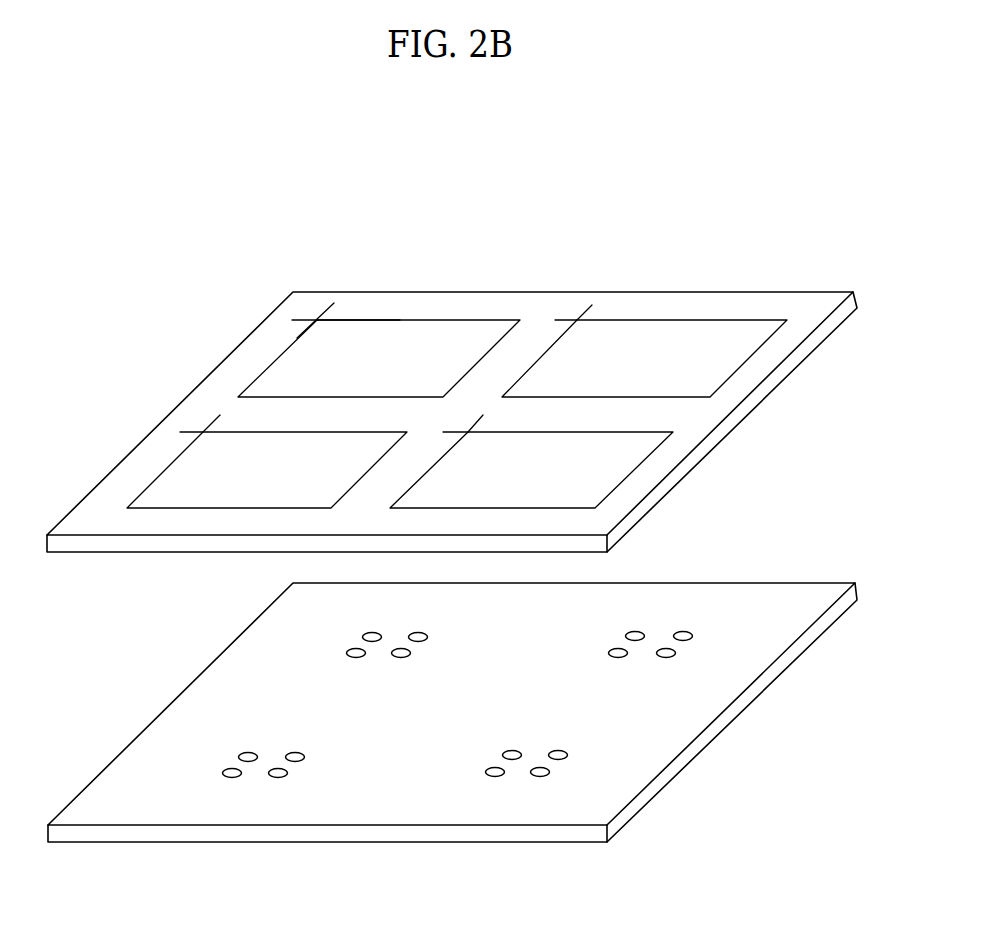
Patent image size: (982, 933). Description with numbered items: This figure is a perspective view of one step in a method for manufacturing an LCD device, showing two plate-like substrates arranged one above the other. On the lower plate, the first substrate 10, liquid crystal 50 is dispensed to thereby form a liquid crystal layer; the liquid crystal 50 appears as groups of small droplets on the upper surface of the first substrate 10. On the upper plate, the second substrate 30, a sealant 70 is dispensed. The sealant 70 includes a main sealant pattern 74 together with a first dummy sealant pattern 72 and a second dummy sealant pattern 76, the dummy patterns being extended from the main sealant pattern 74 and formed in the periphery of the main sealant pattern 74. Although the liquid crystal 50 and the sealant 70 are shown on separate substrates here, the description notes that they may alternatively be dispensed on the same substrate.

The first substrate 10 is at (410, 805).
The second substrate 30 is at (452, 378).
The liquid crystal 50 is at (540, 777).
The sealant 70 is at (339, 271).
The first dummy sealant pattern 72 is at (321, 318).
The main sealant pattern 74 is at (298, 242).
The second dummy sealant pattern 76 is at (301, 322).